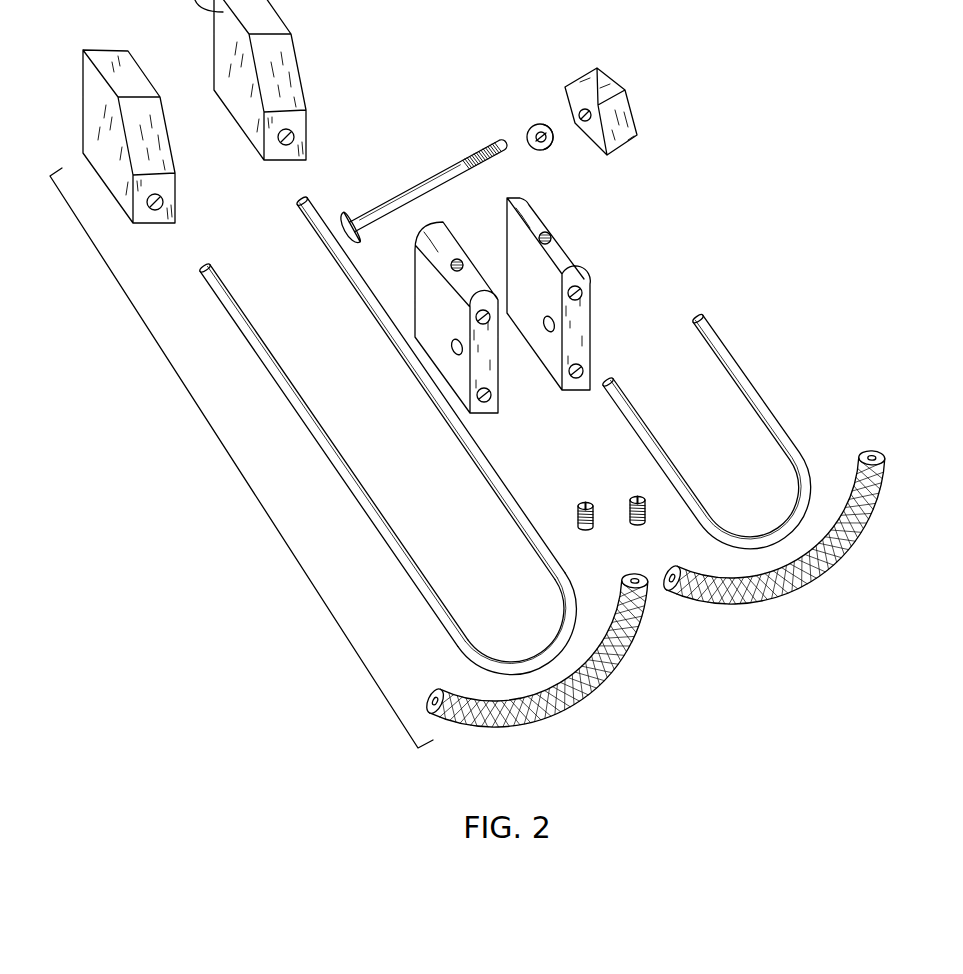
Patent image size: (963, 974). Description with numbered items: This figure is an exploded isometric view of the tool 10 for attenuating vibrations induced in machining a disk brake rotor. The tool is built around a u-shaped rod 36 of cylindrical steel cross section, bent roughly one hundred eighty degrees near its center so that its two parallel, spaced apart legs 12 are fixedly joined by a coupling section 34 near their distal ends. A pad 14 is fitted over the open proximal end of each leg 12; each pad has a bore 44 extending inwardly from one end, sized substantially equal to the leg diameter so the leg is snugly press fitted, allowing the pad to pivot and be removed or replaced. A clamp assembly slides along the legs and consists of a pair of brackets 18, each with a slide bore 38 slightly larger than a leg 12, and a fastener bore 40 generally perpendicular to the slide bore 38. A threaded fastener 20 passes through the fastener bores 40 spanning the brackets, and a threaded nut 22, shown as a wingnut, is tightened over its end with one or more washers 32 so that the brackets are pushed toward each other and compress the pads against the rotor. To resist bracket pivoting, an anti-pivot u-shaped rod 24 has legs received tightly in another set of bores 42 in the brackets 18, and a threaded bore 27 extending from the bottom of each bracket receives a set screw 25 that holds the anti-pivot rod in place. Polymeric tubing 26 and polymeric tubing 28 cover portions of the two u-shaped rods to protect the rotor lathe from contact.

The tool 10 is at (228, 455).
The legs 12 is at (365, 435).
The pad 14 is at (92, 73).
The bracket 18 is at (533, 222).
The threaded fastener 20 is at (402, 190).
The threaded nut 22 is at (625, 138).
The anti-pivot u-shaped rod 24 is at (760, 390).
The set screw 25 is at (595, 515).
The polymeric tubing 26 is at (570, 683).
The threaded bore 27 is at (447, 258).
The polymeric tubing 28 is at (825, 567).
The washer 32 is at (530, 122).
The coupling section 34 is at (537, 644).
The u-shaped rod 36 is at (210, 344).
The slide bore 38 is at (488, 398).
The fastener bore 40 is at (452, 338).
The anti-pivot rod bore 42 is at (493, 318).
The bore 44 is at (163, 200).